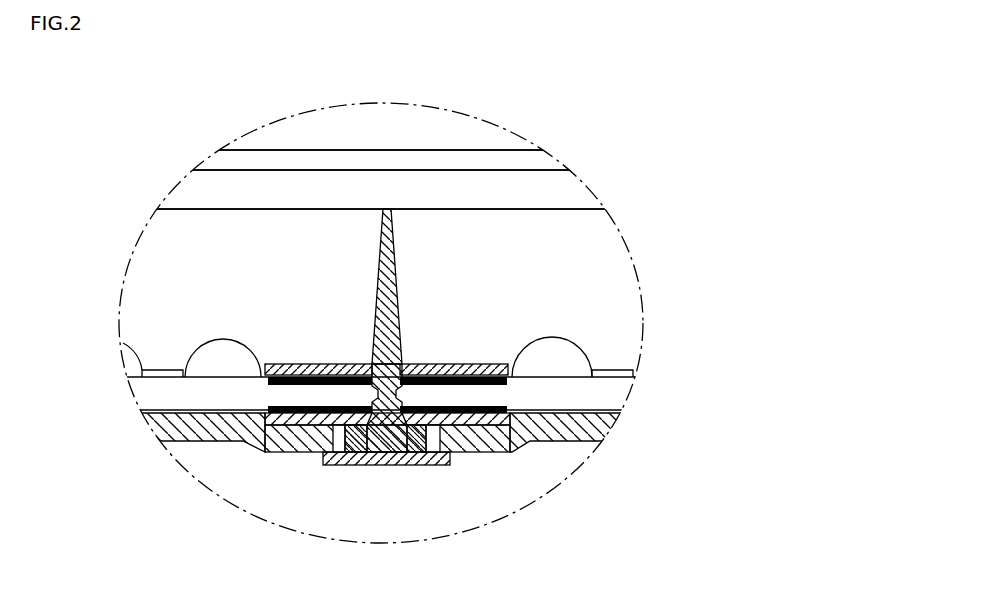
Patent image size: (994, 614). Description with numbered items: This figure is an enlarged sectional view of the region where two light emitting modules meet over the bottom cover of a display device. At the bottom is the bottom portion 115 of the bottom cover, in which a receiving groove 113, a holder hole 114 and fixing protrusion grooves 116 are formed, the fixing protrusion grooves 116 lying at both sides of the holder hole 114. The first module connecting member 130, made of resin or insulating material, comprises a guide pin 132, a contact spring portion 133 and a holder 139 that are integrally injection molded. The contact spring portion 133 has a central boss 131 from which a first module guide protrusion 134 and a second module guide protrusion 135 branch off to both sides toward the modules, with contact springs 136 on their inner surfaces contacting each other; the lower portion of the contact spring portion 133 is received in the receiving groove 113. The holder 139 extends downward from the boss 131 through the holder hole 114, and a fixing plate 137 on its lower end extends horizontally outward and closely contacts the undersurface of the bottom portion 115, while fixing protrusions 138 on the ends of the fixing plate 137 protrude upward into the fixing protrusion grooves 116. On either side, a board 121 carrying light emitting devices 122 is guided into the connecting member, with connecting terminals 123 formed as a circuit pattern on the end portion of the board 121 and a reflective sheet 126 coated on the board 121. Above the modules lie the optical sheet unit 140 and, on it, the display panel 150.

The receiving groove 113 is at (257, 450).
The holder hole 114 is at (380, 463).
The bottom portion 115 is at (603, 433).
The fixing protrusion grooves 116 is at (273, 453).
The board 121 is at (603, 400).
The light emitting devices 122 is at (557, 353).
The connecting terminals 123 is at (463, 383).
The reflective sheet 126 is at (167, 370).
The first module connecting member 130 is at (430, 305).
The central boss 131 is at (397, 367).
The guide pin 132 is at (378, 289).
The contact spring portion 133 is at (289, 361).
The first module guide protrusion 134 is at (328, 364).
The second module guide protrusion 135 is at (483, 364).
The contact springs 136 is at (417, 460).
The fixing plate 137 is at (311, 455).
The fixing protrusions 138 is at (297, 458).
The holder 139 is at (393, 465).
The optical sheet unit 140 is at (202, 191).
The display panel 150 is at (238, 158).